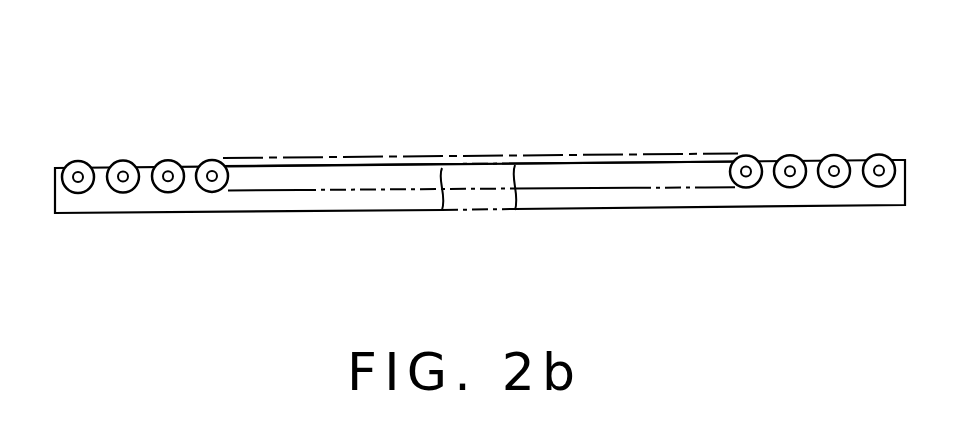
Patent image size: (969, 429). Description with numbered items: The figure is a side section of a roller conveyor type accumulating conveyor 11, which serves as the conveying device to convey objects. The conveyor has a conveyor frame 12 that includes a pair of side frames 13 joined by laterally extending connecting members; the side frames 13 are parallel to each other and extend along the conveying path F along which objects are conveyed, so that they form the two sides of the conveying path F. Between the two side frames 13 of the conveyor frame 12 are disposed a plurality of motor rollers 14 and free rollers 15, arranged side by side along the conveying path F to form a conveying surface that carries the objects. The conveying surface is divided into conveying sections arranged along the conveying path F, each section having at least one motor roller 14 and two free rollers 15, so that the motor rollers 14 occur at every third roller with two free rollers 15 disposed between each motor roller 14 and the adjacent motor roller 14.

The accumulating conveyor 11 is at (378, 130).
The conveyor frame 12 is at (538, 210).
The side frame 13 is at (627, 210).
The motor roller 14 is at (78, 160).
The free roller 15 is at (166, 160).
The conveying path F is at (652, 129).